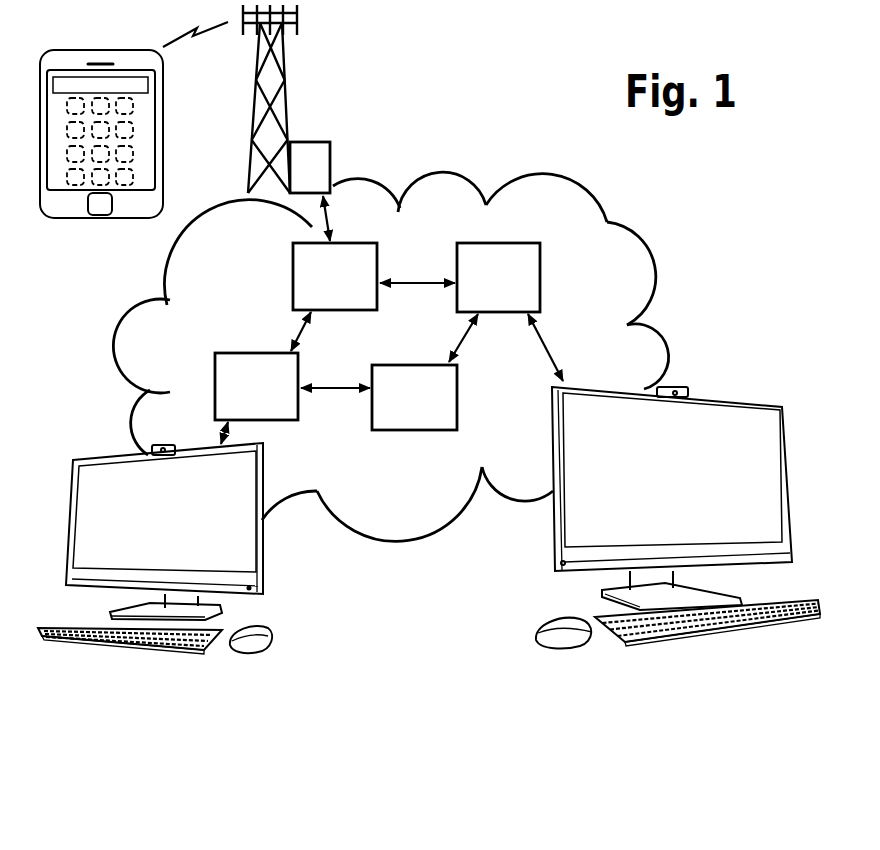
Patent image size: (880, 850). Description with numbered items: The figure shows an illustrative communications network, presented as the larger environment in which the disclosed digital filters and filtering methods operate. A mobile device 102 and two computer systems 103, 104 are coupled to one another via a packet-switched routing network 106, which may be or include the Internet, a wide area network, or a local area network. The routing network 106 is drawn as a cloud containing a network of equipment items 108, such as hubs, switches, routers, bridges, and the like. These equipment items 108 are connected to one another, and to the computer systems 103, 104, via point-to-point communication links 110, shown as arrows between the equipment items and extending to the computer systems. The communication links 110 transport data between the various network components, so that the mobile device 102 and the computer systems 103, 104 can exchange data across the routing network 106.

The mobile device 102 is at (101, 218).
The computer system 103 is at (263, 551).
The computer system 104 is at (553, 540).
The packet-switched routing network 106 is at (418, 504).
The equipment items 108 is at (332, 193).
The point-to-point communication links 110 is at (300, 383).